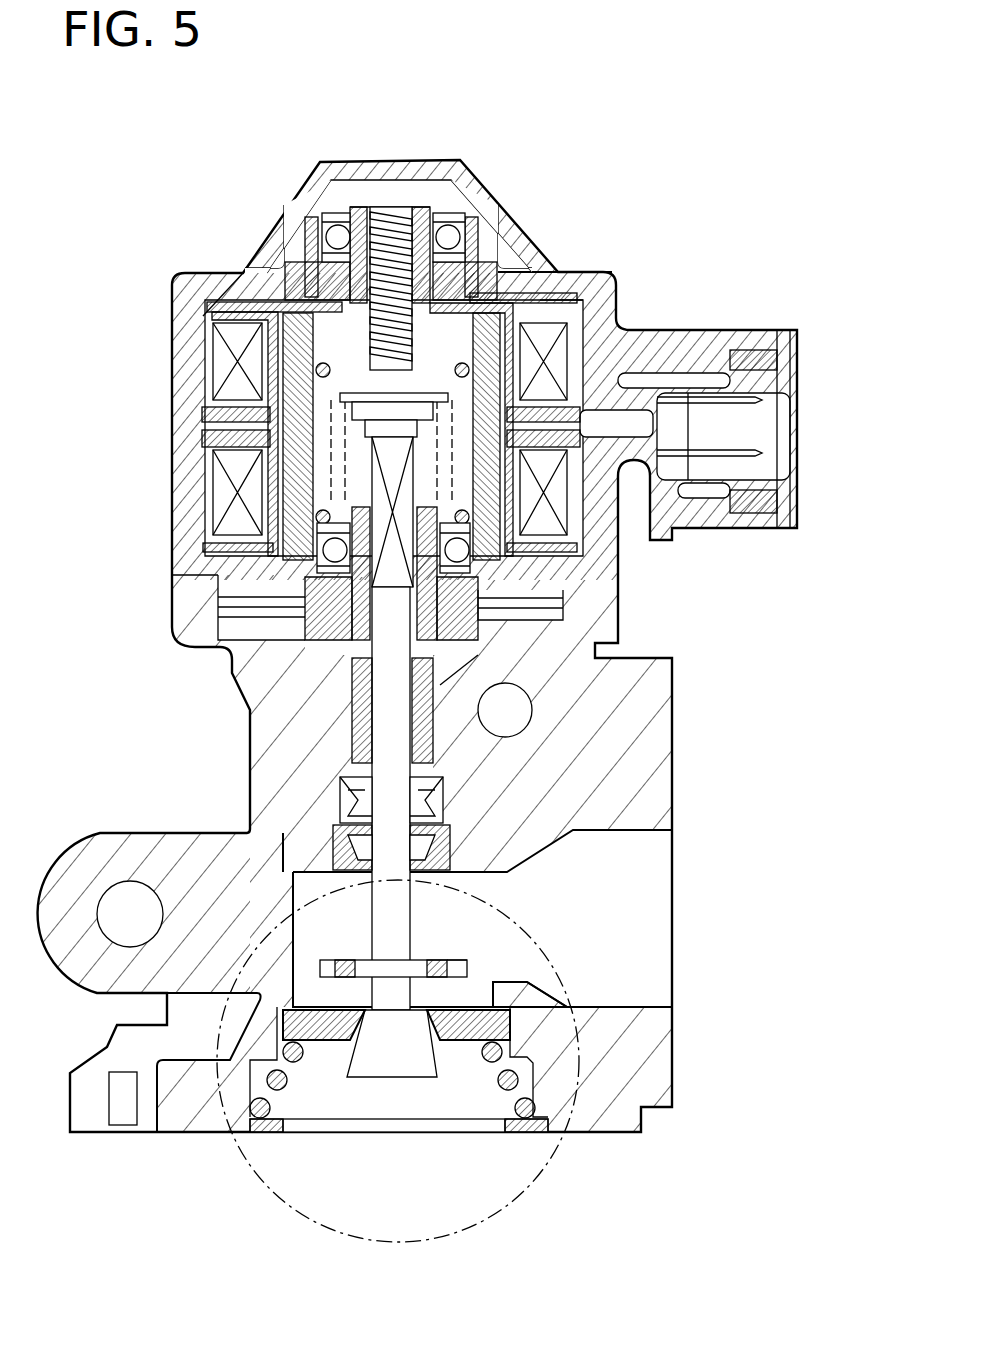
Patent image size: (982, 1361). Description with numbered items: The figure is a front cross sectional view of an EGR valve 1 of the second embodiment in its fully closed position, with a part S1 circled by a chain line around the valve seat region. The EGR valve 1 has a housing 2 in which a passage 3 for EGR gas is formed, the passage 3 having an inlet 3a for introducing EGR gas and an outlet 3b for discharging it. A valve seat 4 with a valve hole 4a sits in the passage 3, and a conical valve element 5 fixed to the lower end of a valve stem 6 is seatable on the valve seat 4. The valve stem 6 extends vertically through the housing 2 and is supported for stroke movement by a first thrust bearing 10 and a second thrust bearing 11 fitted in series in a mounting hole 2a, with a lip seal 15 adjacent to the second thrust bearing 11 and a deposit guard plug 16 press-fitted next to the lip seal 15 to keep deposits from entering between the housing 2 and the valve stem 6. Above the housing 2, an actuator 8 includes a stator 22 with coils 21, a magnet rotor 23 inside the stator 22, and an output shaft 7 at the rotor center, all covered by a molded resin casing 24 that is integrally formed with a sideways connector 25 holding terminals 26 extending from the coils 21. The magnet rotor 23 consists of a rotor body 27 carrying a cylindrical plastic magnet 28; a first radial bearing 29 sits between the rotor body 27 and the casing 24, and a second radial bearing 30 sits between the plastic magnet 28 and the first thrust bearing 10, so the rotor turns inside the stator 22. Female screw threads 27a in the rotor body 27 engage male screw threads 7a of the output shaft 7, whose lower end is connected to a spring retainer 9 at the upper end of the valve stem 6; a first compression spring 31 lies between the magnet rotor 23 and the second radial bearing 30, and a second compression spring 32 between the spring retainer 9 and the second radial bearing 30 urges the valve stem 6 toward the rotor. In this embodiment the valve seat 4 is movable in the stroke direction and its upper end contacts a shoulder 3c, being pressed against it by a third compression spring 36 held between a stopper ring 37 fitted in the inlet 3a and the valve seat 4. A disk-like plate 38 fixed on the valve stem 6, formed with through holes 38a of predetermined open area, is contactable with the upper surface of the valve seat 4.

The EGR valve 1 is at (518, 126).
The housing 2 is at (172, 608).
The mounting hole 2a is at (440, 685).
The passage 3 is at (313, 947).
The inlet 3a is at (260, 1130).
The outlet 3b is at (645, 832).
The shoulder 3c is at (563, 1000).
The valve seat 4 is at (190, 1023).
The valve hole 4a is at (382, 1050).
The valve element 5 is at (423, 1080).
The valve stem 6 is at (383, 918).
The output shaft 7 is at (402, 212).
The male screw threads 7a is at (478, 252).
The actuator 8 is at (172, 358).
The spring retainer 9 is at (343, 396).
The first thrust bearing 10 is at (350, 652).
The second thrust bearing 11 is at (350, 718).
The lip seal 15 is at (340, 800).
The deposit guard plug 16 is at (455, 828).
The coils 21 is at (235, 387).
The stator 22 is at (212, 311).
The magnet rotor 23 is at (359, 357).
The casing 24 is at (172, 445).
The connector 25 is at (700, 353).
The terminals 26 is at (768, 453).
The rotor body 27 is at (300, 316).
The female screw threads 27a is at (548, 300).
The plastic magnet 28 is at (345, 305).
The first radial bearing 29 is at (465, 233).
The second radial bearing 30 is at (318, 548).
The first compression spring 31 is at (440, 478).
The second compression spring 32 is at (465, 485).
The third compression spring 36 is at (537, 1120).
The stopper ring 37 is at (518, 1133).
The plate 38 is at (467, 968).
The through holes 38a is at (450, 947).
The part S1 is at (470, 1235).